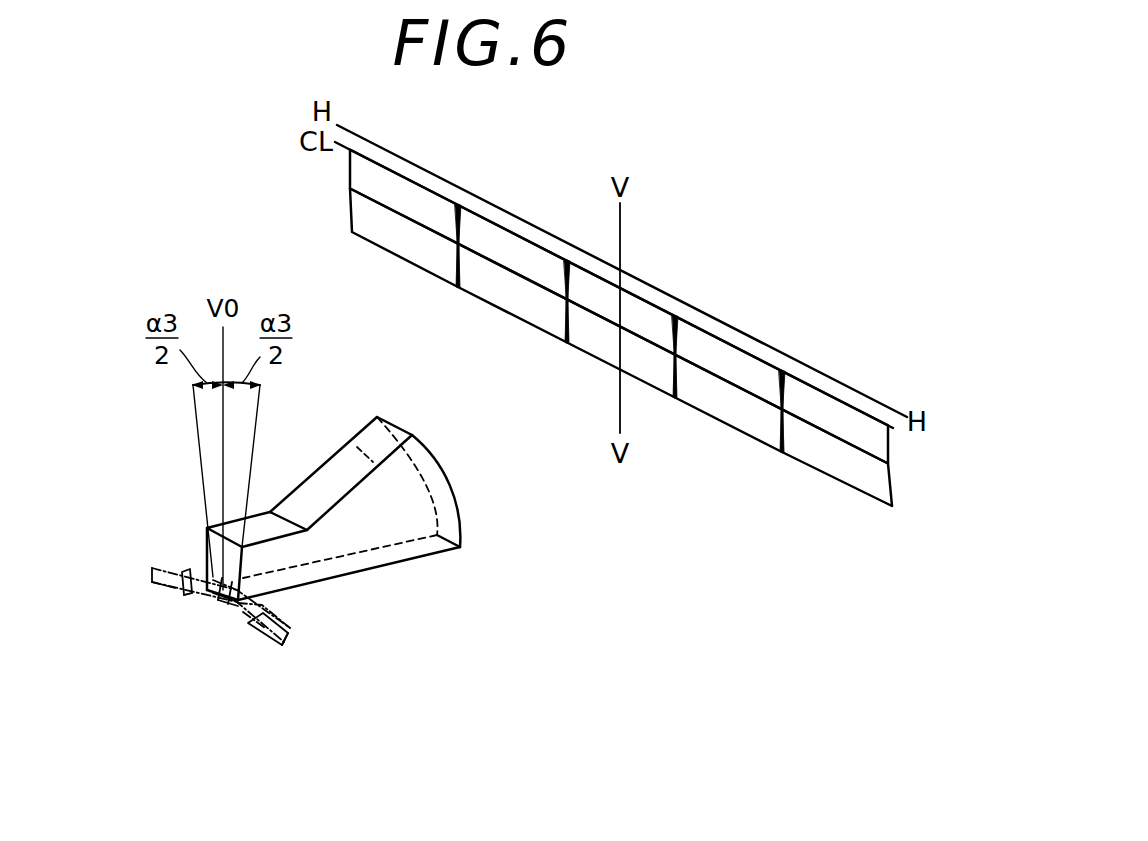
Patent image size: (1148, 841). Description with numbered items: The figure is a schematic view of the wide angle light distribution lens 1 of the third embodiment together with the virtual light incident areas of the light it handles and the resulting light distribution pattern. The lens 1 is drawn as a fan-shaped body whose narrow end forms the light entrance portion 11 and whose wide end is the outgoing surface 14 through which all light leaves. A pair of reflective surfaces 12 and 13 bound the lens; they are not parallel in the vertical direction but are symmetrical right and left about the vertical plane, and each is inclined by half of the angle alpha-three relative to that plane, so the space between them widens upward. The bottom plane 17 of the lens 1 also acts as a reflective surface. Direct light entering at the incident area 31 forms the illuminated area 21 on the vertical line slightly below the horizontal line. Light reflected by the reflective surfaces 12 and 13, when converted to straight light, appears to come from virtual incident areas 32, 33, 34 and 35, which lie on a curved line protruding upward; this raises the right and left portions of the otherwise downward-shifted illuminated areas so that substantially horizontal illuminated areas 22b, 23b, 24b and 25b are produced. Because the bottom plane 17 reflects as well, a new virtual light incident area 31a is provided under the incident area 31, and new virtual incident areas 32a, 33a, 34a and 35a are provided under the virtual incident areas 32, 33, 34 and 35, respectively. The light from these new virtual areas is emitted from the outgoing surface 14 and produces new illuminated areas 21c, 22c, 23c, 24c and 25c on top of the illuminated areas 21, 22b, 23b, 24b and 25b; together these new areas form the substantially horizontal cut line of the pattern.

The wide angle light distribution lens 1 is at (322, 497).
The light entrance portion 11 is at (213, 547).
The reflective surface 12 is at (403, 523).
The reflective surface 13 is at (353, 447).
The outgoing surface 14 is at (432, 478).
The bottom plane 17 is at (377, 560).
The illuminated area 21 is at (605, 352).
The new illuminated area 21c is at (605, 307).
The illuminated area 22b is at (510, 302).
The new illuminated area 22c is at (500, 257).
The illuminated area 23b is at (728, 412).
The new illuminated area 23c is at (700, 410).
The illuminated area 24b is at (392, 238).
The new illuminated area 24c is at (363, 180).
The illuminated area 25b is at (835, 465).
The new illuminated area 25c is at (828, 420).
The incident area 31 is at (213, 593).
The new virtual light incident area 31a is at (227, 607).
The virtual incident area 32 is at (260, 603).
The new virtual incident area 32a is at (247, 622).
The virtual incident area 33 is at (185, 573).
The new virtual incident area 33a is at (187, 592).
The virtual incident area 34 is at (277, 633).
The new virtual incident area 34a is at (273, 643).
The virtual incident area 35 is at (153, 570).
The new virtual incident area 35a is at (153, 583).